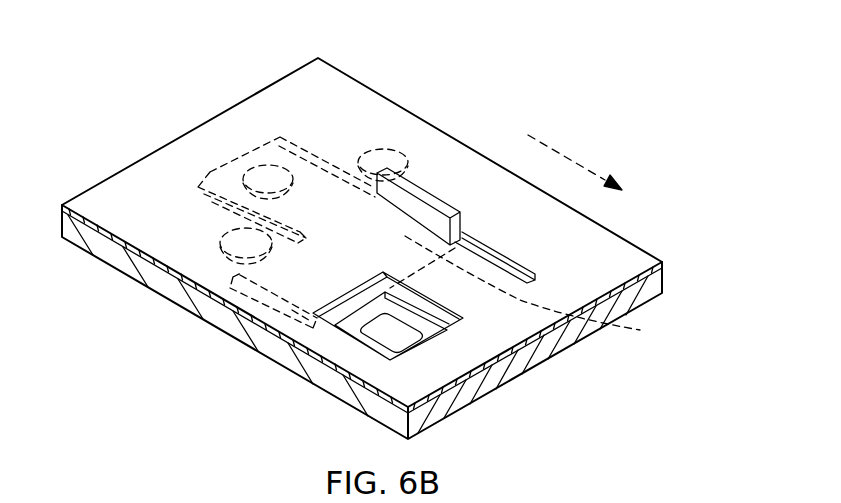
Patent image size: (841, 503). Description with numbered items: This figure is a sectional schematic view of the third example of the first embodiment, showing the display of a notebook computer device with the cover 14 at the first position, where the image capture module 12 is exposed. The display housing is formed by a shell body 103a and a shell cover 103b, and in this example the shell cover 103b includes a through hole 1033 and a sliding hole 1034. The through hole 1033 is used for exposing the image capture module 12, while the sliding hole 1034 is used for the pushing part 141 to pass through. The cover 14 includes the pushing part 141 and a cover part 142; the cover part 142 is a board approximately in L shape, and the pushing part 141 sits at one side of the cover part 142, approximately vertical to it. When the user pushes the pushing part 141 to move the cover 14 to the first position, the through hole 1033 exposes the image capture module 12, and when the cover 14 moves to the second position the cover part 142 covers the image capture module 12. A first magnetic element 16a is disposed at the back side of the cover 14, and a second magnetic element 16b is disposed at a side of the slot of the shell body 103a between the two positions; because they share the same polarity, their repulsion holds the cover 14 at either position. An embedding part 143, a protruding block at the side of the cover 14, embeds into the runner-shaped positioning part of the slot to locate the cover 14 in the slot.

The image capture module 12 is at (397, 338).
The cover 14 is at (207, 180).
The first magnetic element 16a is at (250, 150).
The second magnetic element 16b is at (395, 148).
The shell body 103a is at (220, 330).
The shell cover 103b is at (270, 84).
The pushing part 141 is at (440, 193).
The cover part 142 is at (539, 289).
The embedding part 143 is at (285, 333).
The through hole 1033 is at (452, 324).
The sliding hole 1034 is at (527, 276).